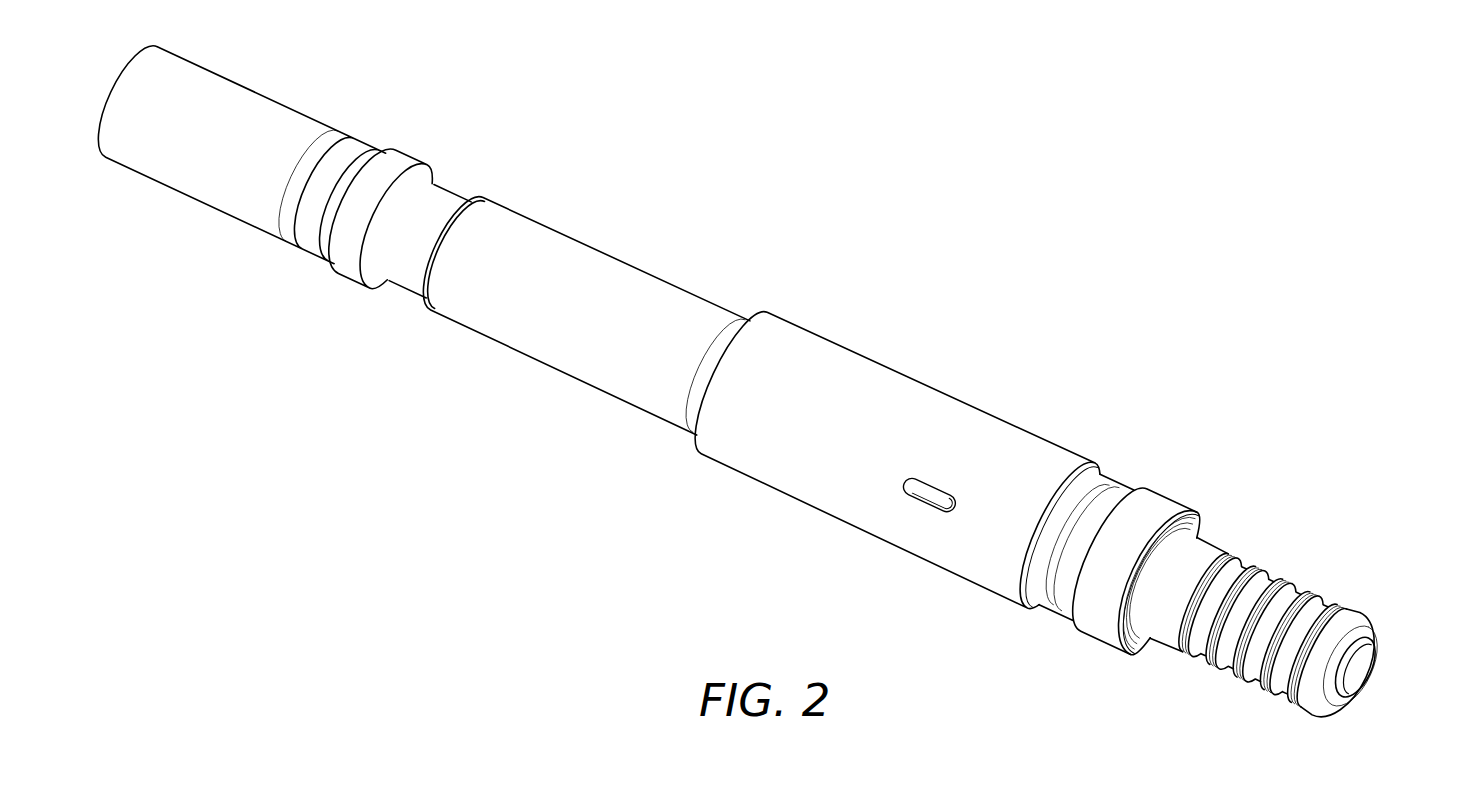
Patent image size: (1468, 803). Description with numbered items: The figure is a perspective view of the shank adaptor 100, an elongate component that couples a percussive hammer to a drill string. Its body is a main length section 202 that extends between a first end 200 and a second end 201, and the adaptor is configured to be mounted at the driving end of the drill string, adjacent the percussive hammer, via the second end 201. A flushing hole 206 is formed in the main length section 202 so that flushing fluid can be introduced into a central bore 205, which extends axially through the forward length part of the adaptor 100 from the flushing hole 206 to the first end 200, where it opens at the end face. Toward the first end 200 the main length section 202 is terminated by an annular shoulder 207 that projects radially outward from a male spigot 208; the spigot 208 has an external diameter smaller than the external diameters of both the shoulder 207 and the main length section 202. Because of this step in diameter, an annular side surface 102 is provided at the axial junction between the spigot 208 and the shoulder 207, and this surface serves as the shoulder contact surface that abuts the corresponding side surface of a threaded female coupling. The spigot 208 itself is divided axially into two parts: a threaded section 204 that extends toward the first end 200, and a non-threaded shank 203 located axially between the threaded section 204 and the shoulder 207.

The shank adaptor 100 is at (462, 486).
The annular side surface 102 is at (1200, 520).
The first end 200 is at (1380, 634).
The second end 201 is at (131, 68).
The main length section 202 is at (802, 259).
The non-threaded shank 203 is at (1173, 638).
The threaded section 204 is at (1253, 683).
The central bore 205 is at (1350, 670).
The flushing hole 206 is at (913, 489).
The annular shoulder 207 is at (1160, 500).
The male spigot 208 is at (1327, 565).